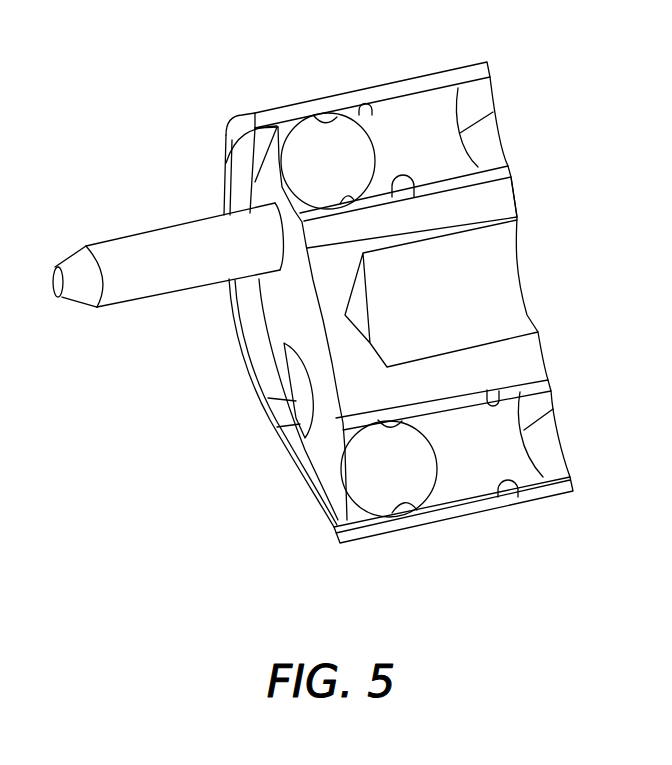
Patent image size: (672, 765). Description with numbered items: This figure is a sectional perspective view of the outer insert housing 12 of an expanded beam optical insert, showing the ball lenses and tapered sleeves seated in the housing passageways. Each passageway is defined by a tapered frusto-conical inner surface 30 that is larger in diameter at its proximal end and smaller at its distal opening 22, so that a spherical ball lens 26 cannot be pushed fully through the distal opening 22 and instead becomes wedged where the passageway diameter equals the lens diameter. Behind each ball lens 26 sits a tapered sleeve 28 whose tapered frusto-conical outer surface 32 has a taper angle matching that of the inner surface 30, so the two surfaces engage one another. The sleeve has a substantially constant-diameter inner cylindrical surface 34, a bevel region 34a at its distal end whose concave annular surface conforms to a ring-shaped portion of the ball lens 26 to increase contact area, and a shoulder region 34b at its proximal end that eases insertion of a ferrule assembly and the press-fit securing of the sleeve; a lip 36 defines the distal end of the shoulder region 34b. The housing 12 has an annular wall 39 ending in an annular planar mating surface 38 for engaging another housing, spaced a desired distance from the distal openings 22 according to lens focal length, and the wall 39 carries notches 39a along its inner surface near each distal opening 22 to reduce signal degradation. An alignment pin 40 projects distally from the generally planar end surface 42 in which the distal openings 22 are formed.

The outer insert housing 12 is at (468, 515).
The distal opening 22 is at (226, 163).
The ball lens 26 is at (318, 173).
The tapered sleeve 28 is at (491, 79).
The tapered frusto-conical inner surface 30 is at (360, 106).
The tapered frusto-conical outer surface 32 is at (413, 76).
The inner cylindrical surface 34 is at (410, 158).
The bevel region 34a is at (336, 115).
The shoulder region 34b is at (487, 150).
The lip 36 is at (493, 112).
The annular planar mating surface 38 is at (242, 126).
The annular wall 39 is at (222, 188).
The notch 39a is at (268, 410).
The alignment pin 40 is at (118, 250).
The planar end surface 42 is at (287, 293).